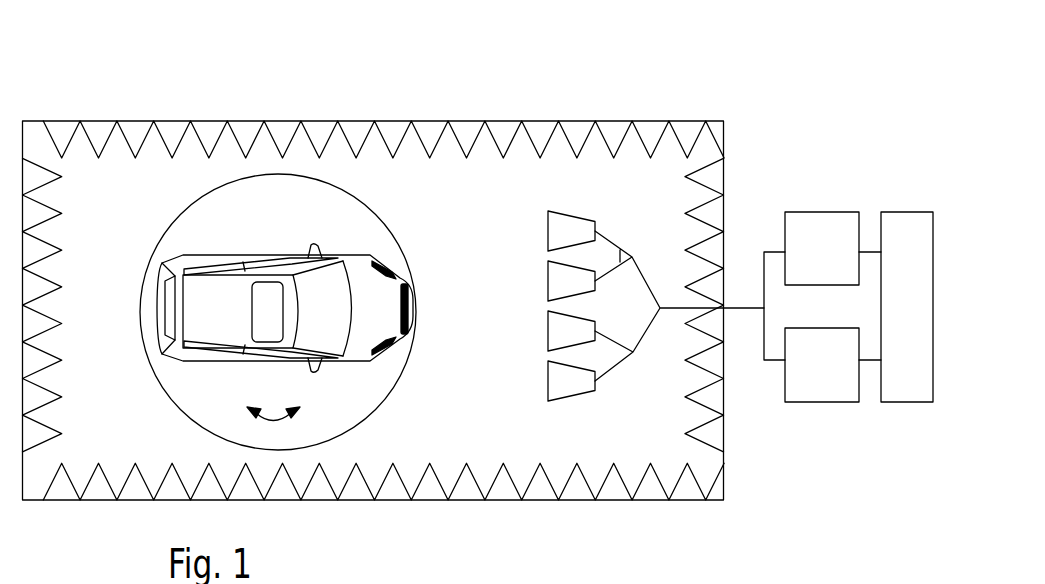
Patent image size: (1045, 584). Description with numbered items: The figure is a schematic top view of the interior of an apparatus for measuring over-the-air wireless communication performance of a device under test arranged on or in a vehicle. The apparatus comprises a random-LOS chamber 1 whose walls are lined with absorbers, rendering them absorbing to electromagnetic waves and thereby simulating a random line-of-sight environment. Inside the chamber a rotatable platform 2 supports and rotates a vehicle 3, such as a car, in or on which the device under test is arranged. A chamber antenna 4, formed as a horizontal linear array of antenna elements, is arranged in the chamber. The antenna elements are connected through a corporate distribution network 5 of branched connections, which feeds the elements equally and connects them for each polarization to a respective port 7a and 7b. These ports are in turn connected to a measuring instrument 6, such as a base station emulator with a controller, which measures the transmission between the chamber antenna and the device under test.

The random-LOS chamber 1 is at (133, 120).
The rotatable platform 2 is at (287, 195).
The vehicle 3 is at (347, 260).
The chamber antenna 4 is at (575, 222).
The corporate distribution network 5 is at (630, 257).
The measuring instrument 6 is at (902, 402).
The port 7a is at (820, 212).
The port 7b is at (818, 402).